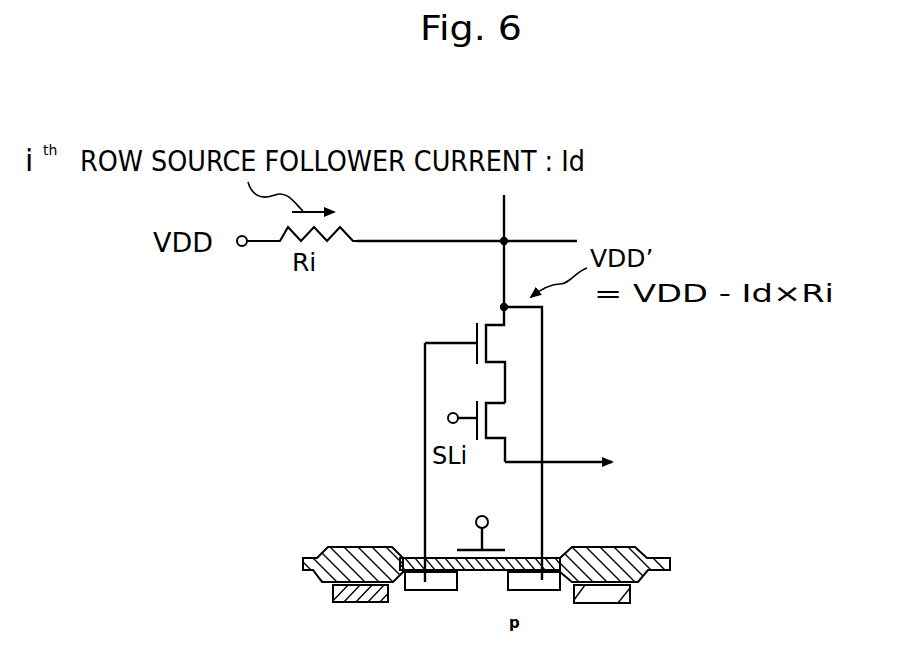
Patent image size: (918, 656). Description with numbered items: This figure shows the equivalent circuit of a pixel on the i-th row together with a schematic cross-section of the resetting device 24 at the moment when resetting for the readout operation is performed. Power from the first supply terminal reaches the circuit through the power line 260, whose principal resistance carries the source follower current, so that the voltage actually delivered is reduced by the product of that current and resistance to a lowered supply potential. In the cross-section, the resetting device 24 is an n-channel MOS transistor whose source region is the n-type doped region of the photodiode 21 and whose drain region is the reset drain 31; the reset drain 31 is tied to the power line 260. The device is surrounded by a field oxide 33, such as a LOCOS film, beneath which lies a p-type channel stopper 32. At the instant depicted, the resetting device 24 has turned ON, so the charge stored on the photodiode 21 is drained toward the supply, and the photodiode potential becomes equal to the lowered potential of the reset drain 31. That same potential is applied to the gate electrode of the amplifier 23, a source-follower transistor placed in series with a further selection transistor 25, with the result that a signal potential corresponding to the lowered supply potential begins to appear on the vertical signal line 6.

The power line 260 is at (547, 241).
The amplifier 23 is at (477, 329).
The selection transistor 25 is at (477, 407).
The resetting device 24 is at (475, 540).
The vertical signal line 6 is at (580, 462).
The photodiode 21 is at (430, 592).
The reset drain 31 is at (550, 592).
The channel stopper 32 is at (620, 603).
The field oxide 33 is at (642, 575).